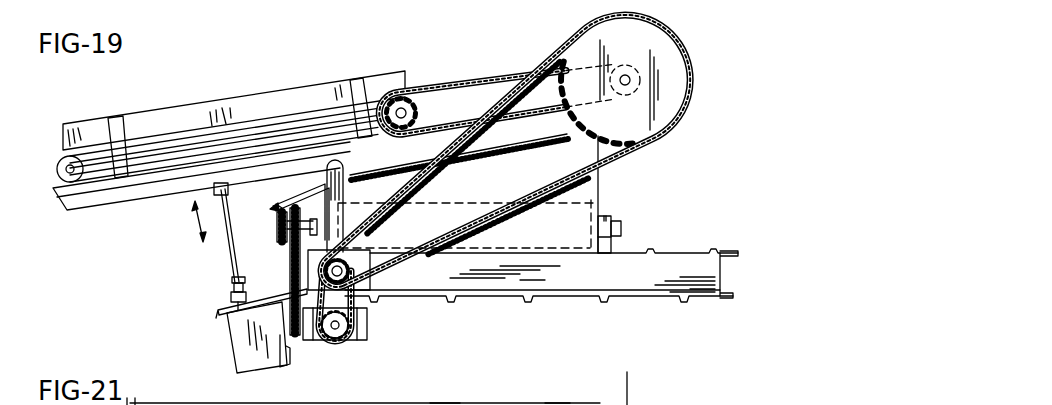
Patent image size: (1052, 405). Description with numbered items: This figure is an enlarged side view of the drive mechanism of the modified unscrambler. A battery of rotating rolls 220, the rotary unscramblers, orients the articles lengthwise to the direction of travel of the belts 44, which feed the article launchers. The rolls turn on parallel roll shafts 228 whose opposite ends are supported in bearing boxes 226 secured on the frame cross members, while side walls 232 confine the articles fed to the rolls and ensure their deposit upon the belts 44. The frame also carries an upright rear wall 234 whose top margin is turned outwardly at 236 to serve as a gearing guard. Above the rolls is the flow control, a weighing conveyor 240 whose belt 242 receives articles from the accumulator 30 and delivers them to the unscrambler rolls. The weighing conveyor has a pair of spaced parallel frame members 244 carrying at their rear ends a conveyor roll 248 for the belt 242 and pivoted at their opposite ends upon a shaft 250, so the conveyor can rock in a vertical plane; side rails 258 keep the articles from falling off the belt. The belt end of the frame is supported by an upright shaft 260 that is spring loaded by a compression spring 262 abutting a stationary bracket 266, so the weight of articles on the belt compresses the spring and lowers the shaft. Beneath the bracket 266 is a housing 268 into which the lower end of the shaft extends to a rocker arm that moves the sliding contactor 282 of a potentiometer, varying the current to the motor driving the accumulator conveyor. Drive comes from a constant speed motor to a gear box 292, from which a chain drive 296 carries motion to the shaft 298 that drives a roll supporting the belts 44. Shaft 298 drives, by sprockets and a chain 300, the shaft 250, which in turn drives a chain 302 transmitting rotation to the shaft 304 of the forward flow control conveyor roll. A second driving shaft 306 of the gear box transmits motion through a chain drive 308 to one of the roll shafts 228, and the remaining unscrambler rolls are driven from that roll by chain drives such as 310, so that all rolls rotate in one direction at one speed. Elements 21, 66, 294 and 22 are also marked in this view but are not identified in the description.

In FIG. 19, the upper conveyor 21 is at (172, 124).
In FIG. 19, the side rails 258 is at (267, 97).
In FIG. 19, the belt 242 is at (298, 115).
In FIG. 19, the shaft 304 is at (406, 106).
In FIG. 19, the chain 302 is at (492, 81).
In FIG. 19, the shaft 250 is at (630, 80).
In FIG. 19, the conveyor roll 248 is at (58, 177).
In FIG. 19, the weighing conveyor 240 is at (119, 209).
In FIG. 19, the frame members 244 is at (152, 192).
In FIG. 19, the upright rear wall 234 is at (346, 193).
In FIG. 19, the gearing guard 236 is at (310, 186).
In FIG. 19, the chain drive 310 is at (278, 205).
In FIG. 19, the upright shaft 260 is at (228, 249).
In FIG. 19, the sliding contactor 282 is at (232, 281).
In FIG. 19, the compression spring 262 is at (231, 296).
In FIG. 19, the bracket 266 is at (219, 309).
In FIG. 19, the housing 268 is at (238, 360).
In FIG. 19, the second driving shaft 306 is at (287, 364).
In FIG. 19, the bearing boxes 226 is at (312, 242).
In FIG. 19, the chain drive 308 is at (299, 272).
In FIG. 19, the side walls 232 is at (603, 174).
In FIG. 19, the chain 300 is at (525, 200).
In FIG. 19, the shaft 298 is at (380, 242).
In FIG. 19, the accumulator 30 is at (356, 283).
In FIG. 19, the rotating rolls 220 is at (600, 192).
In FIG. 21, the rotating rolls 220 is at (557, 404).
In FIG. 19, the roll shafts 228 is at (612, 227).
In FIG. 19, the belts 44 is at (685, 251).
In FIG. 19, the frame rail 66 is at (712, 251).
In FIG. 21, the frame rail 66 is at (447, 404).
In FIG. 19, the gear box 292 is at (364, 330).
In FIG. 19, the motor 294 is at (340, 329).
In FIG. 19, the chain drive 296 is at (323, 343).
In FIG. 21, the section line 22 is at (634, 383).